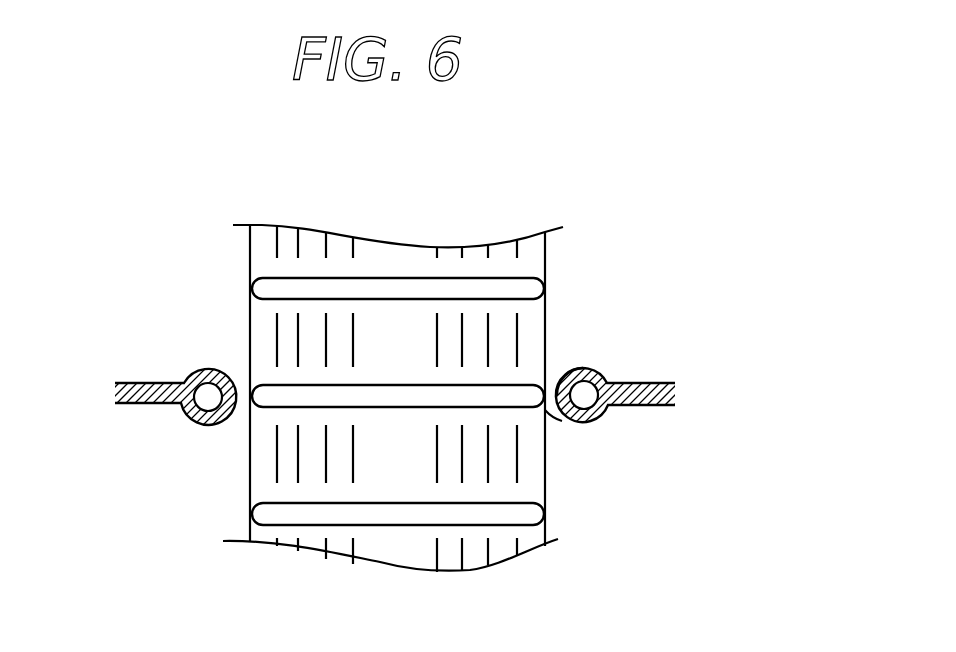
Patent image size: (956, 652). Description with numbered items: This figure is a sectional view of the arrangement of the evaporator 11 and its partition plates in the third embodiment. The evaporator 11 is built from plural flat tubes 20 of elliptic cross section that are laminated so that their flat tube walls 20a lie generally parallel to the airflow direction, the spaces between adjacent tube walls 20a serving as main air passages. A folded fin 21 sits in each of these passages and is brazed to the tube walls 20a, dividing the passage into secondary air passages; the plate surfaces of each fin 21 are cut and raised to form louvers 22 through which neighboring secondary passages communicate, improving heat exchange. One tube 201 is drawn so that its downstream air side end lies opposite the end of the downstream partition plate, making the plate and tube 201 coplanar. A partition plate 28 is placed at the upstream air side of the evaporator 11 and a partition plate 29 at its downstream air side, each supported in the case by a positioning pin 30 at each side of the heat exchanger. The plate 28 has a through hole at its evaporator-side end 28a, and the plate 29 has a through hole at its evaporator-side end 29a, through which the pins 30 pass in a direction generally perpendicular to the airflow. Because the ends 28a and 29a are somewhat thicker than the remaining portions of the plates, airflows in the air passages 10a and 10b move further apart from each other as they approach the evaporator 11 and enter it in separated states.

The air passage 10a is at (180, 340).
The air passage 10b is at (213, 488).
The evaporator 11 is at (551, 188).
The tube 20 is at (532, 264).
The tube wall 20a is at (513, 298).
The tube 201 is at (556, 413).
The folded fin 21 is at (503, 468).
The louver 22 is at (488, 553).
The partition plate 28 is at (125, 405).
The end of partition plate 28a is at (197, 427).
The partition plate 29 is at (658, 383).
The end of partition plate 29a is at (563, 368).
The positioning pin 30 is at (585, 393).